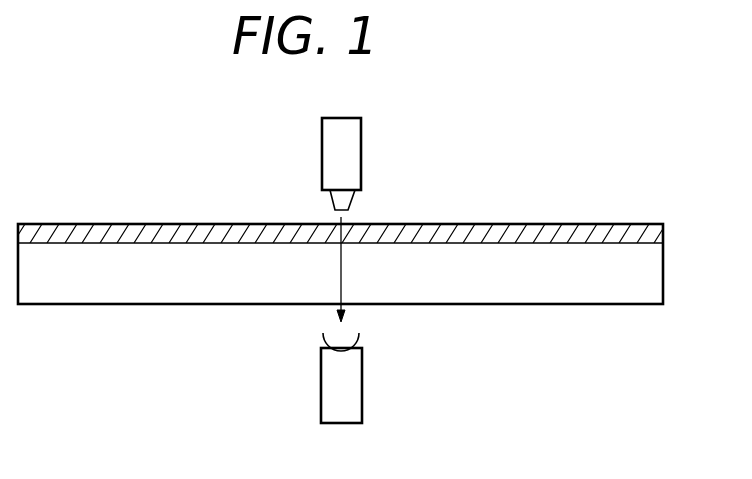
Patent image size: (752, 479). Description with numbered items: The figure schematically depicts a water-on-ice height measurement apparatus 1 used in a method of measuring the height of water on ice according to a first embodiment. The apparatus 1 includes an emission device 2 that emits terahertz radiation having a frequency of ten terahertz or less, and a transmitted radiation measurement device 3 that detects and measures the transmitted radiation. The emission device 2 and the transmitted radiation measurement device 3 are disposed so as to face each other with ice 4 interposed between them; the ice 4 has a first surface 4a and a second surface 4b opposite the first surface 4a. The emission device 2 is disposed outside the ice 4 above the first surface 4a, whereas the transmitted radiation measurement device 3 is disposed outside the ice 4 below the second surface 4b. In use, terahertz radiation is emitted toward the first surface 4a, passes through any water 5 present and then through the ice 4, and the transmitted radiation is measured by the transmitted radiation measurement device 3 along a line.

The water-on-ice height measurement apparatus 1 is at (47, 131).
The emission device 2 is at (347, 168).
The transmitted radiation measurement device 3 is at (347, 387).
The ice 4 is at (655, 276).
The first surface 4a is at (43, 224).
The second surface 4b is at (40, 305).
The water 5 is at (657, 235).